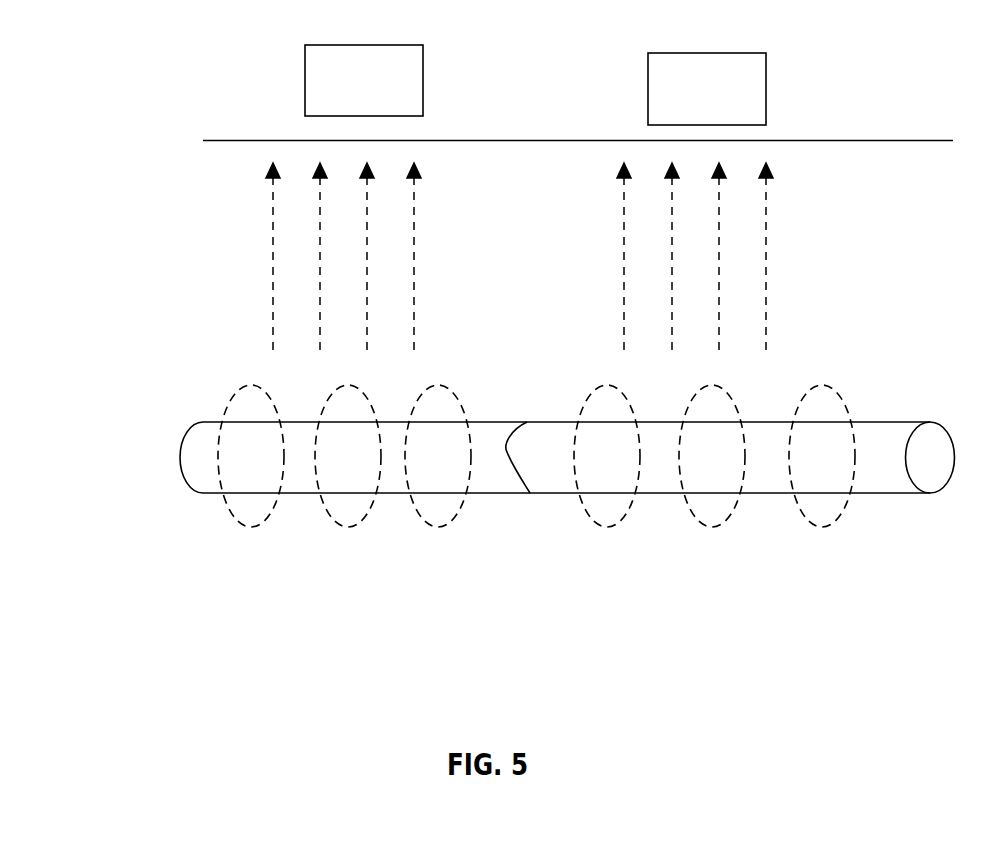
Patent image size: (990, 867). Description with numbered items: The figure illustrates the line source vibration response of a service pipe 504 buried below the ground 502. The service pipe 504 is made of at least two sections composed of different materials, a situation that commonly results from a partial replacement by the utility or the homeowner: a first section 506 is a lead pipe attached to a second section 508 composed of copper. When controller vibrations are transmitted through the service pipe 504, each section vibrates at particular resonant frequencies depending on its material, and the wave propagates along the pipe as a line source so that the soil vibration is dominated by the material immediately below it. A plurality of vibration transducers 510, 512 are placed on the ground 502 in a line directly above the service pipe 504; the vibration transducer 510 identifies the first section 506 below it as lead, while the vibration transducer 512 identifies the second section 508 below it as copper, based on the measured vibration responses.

The ground 502 is at (203, 141).
The service pipe 504 is at (180, 457).
The first section 506 is at (765, 493).
The second section 508 is at (398, 493).
The vibration transducer 510 is at (648, 71).
The vibration transducer 512 is at (302, 63).